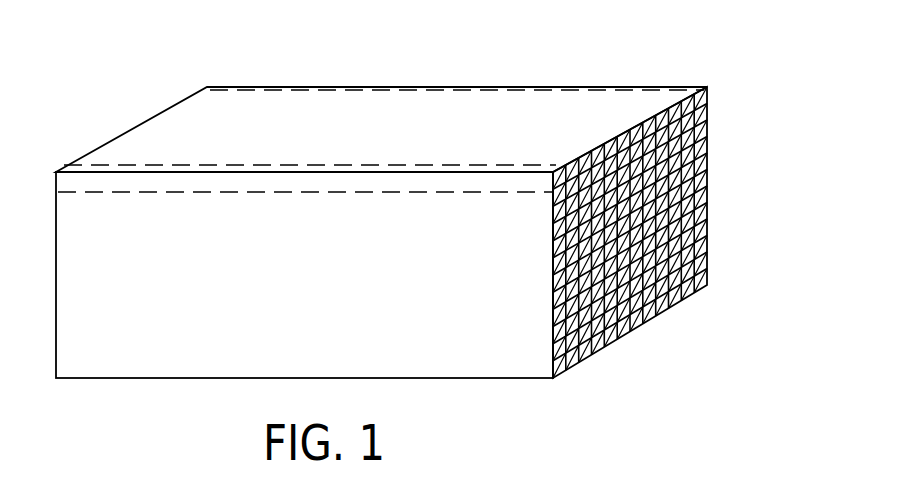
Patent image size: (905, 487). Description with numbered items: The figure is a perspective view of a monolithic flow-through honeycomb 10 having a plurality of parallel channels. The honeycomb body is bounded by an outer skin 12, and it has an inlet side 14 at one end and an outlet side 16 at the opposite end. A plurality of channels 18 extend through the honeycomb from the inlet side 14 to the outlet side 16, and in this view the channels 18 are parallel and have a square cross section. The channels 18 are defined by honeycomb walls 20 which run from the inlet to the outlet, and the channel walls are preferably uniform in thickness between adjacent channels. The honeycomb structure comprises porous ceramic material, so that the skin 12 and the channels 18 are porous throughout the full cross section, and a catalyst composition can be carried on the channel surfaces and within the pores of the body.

The flow-through honeycomb 10 is at (467, 70).
The outer skin 12 is at (590, 103).
The inlet side 14 is at (707, 100).
The outlet side 16 is at (123, 132).
The channels 18 is at (318, 178).
The honeycomb walls 20 is at (620, 342).